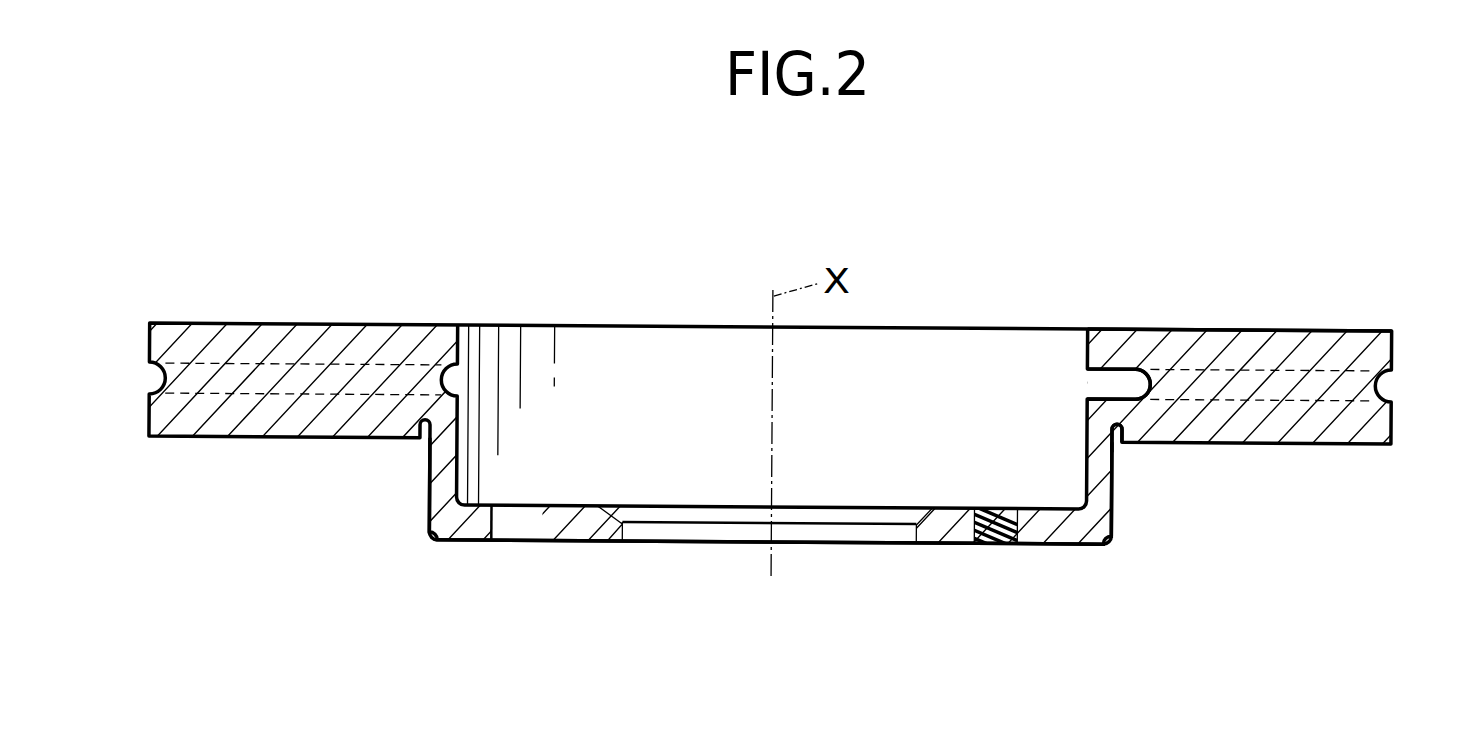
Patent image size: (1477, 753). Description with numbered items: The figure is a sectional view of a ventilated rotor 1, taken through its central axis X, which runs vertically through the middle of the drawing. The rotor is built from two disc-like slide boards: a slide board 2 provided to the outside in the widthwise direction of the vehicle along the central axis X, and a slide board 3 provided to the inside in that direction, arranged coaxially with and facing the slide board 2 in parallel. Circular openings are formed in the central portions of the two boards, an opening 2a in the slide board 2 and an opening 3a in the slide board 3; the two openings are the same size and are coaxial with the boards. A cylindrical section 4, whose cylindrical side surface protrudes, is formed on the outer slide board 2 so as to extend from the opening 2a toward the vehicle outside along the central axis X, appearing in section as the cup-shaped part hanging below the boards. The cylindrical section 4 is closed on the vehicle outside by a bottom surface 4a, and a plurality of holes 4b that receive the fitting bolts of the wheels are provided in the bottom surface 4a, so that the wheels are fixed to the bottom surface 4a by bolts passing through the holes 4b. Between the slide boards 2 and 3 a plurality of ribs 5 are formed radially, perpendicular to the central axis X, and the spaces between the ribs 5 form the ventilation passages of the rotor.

The ventilated rotor 1 is at (1124, 209).
The slide board 2 is at (1391, 425).
The opening 2a is at (1097, 428).
The slide board 3 is at (1391, 345).
The opening 3a is at (1088, 350).
The cylindrical section 4 is at (1097, 500).
The bottom surface 4a is at (1060, 542).
The holes 4b is at (510, 542).
The ribs 5 is at (165, 380).